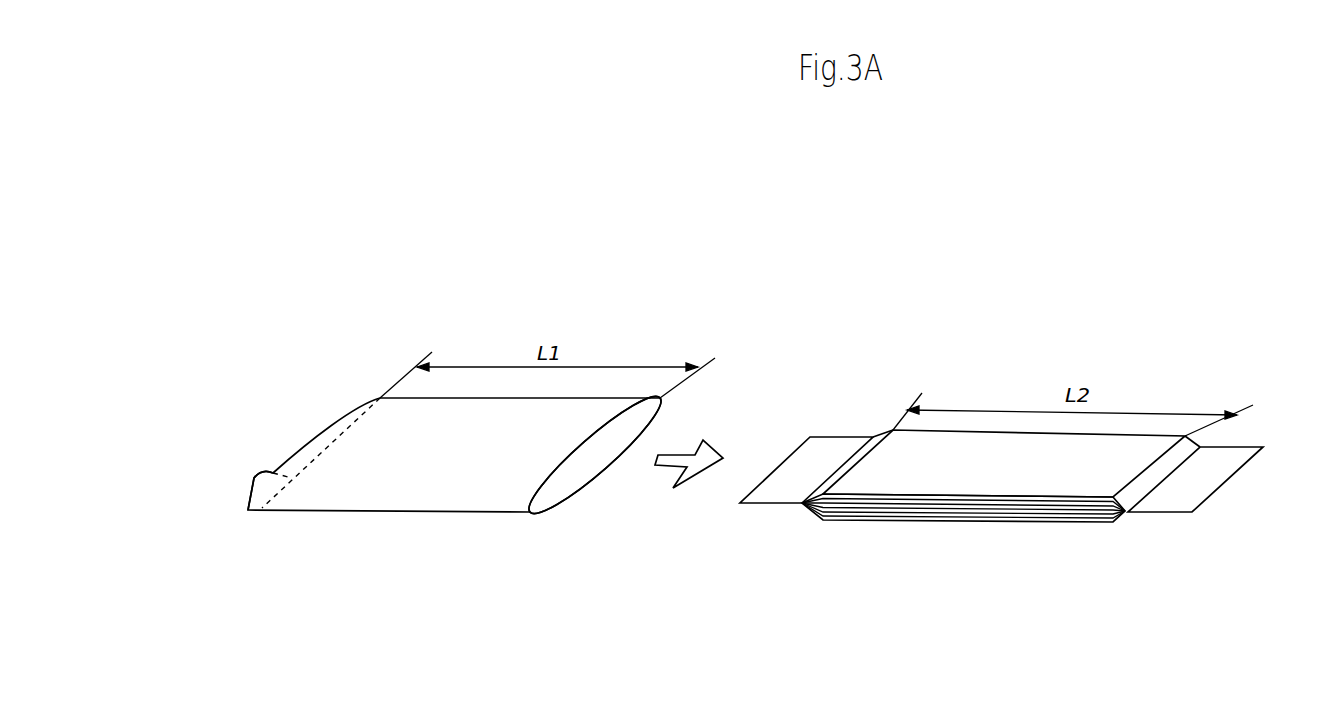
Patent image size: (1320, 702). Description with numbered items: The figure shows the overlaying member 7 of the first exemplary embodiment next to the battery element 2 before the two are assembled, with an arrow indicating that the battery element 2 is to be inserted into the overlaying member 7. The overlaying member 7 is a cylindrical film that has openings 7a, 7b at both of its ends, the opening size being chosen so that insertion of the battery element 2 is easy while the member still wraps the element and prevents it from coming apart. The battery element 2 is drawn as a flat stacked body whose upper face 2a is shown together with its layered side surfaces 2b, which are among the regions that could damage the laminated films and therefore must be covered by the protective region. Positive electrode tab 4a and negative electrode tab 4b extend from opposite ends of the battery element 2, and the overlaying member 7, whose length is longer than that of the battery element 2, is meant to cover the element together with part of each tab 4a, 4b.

The overlaying member 7 is at (360, 495).
The opening 7a is at (588, 470).
The opening 7b is at (270, 474).
The battery element 2 is at (993, 471).
The flat portion of the wound body 2a is at (987, 462).
The side surfaces 2b is at (978, 515).
The positive electrode tab 4a is at (1218, 460).
The negative electrode tab 4b is at (832, 460).